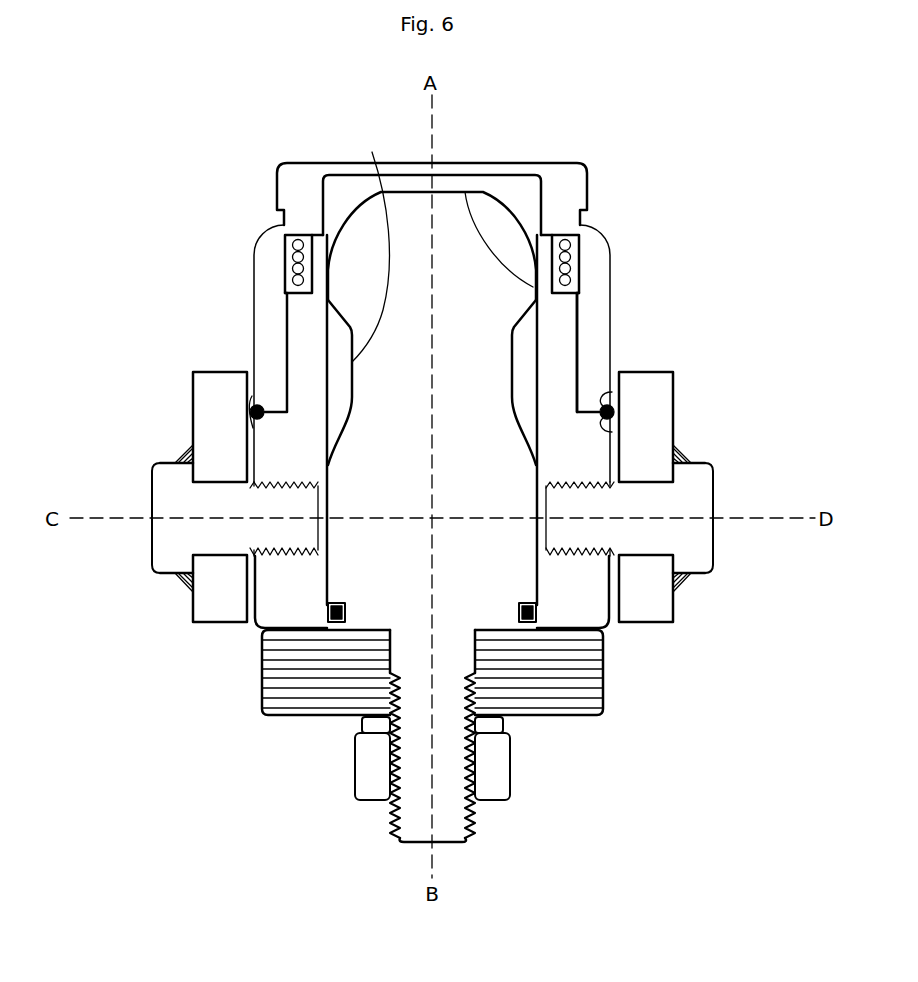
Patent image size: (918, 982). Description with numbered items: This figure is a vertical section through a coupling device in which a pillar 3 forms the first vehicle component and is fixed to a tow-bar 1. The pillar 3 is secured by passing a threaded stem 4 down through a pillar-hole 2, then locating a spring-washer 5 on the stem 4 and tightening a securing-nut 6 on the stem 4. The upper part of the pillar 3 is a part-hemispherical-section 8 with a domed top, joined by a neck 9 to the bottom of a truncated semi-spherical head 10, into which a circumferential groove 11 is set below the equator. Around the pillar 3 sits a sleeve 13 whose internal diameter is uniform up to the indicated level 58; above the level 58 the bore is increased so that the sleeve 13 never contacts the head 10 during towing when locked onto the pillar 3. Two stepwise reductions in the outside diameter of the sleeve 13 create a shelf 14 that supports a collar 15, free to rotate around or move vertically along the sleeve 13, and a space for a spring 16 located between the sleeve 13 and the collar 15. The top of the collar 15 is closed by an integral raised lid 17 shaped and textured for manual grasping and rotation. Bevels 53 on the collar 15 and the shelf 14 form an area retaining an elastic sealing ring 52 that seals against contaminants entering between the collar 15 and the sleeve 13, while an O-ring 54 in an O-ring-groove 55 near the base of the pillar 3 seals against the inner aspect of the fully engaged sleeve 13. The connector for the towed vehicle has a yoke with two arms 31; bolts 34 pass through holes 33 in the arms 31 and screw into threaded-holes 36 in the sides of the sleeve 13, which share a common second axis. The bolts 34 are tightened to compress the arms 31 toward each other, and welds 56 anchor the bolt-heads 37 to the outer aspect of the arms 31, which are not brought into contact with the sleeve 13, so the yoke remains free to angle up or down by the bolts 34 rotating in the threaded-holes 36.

The tow-bar 1 is at (263, 682).
The pillar-hole 2 is at (478, 688).
The pillar 3 is at (452, 582).
The threaded stem 4 is at (392, 815).
The spring-washer 5 is at (360, 726).
The securing-nut 6 is at (355, 765).
The part-hemispherical-section 8 is at (523, 410).
The neck 9 is at (432, 245).
The truncated semi-spherical head 10 is at (490, 192).
The circumferential groove 11 is at (358, 335).
The sleeve 13 is at (532, 597).
The shelf 14 is at (587, 410).
The collar 15 is at (252, 297).
The spring 16 is at (283, 246).
The raised lid 17 is at (277, 187).
The arms 31 is at (240, 372).
The hole 33 is at (223, 555).
The bolt 34 is at (152, 496).
The threaded-holes 36 is at (288, 548).
The bolt-heads 37 is at (160, 463).
The elastic sealing ring 52 is at (616, 410).
The bevels 53 is at (603, 398).
The O-ring 54 is at (532, 618).
The O-ring-groove 55 is at (537, 613).
The welds 56 is at (180, 452).
The level 58 is at (465, 192).